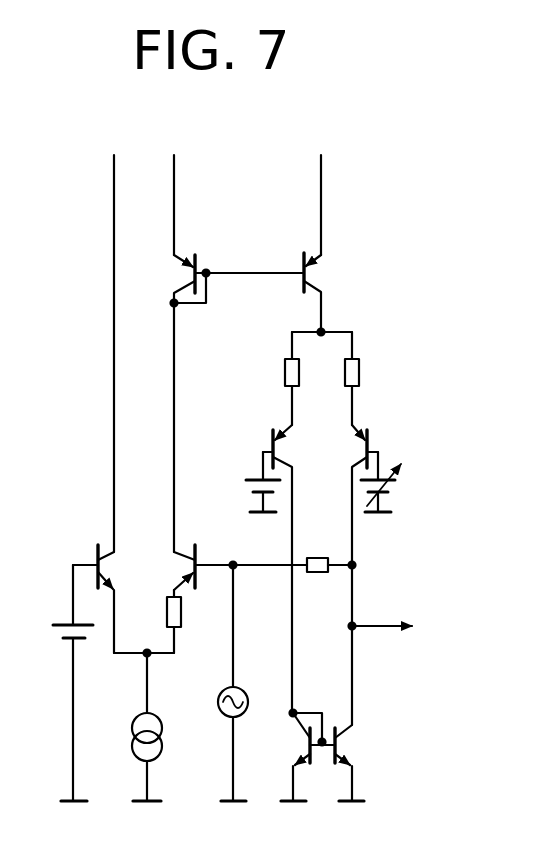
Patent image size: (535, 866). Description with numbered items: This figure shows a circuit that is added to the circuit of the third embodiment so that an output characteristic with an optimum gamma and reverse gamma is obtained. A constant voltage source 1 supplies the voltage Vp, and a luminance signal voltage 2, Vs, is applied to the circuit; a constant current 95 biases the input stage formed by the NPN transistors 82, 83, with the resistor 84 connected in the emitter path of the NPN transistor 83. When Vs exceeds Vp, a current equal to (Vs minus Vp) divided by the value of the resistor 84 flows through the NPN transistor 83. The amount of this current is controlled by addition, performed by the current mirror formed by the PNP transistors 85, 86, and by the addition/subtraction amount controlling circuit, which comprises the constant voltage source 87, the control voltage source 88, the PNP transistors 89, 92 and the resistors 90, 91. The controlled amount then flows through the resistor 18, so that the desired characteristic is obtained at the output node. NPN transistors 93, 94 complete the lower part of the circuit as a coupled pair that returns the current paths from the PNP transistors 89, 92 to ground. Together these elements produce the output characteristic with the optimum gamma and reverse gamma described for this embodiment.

The constant voltage source 1 is at (60, 683).
The luminance signal voltage 2 is at (248, 683).
The resistor 18 is at (292, 554).
The NPN transistor 82 is at (93, 589).
The NPN transistor 83 is at (203, 561).
The resistor 84 is at (191, 625).
The PNP transistor 85 is at (192, 269).
The PNP transistor 86 is at (328, 292).
The constant voltage source 87 is at (253, 482).
The control voltage source 88 is at (397, 481).
The PNP transistor 89 is at (267, 565).
The resistor 90 is at (275, 378).
The resistor 91 is at (369, 378).
The PNP transistor 92 is at (374, 569).
The NPN transistor 93 is at (357, 763).
The NPN transistor 94 is at (298, 756).
The constant current 95 is at (165, 727).